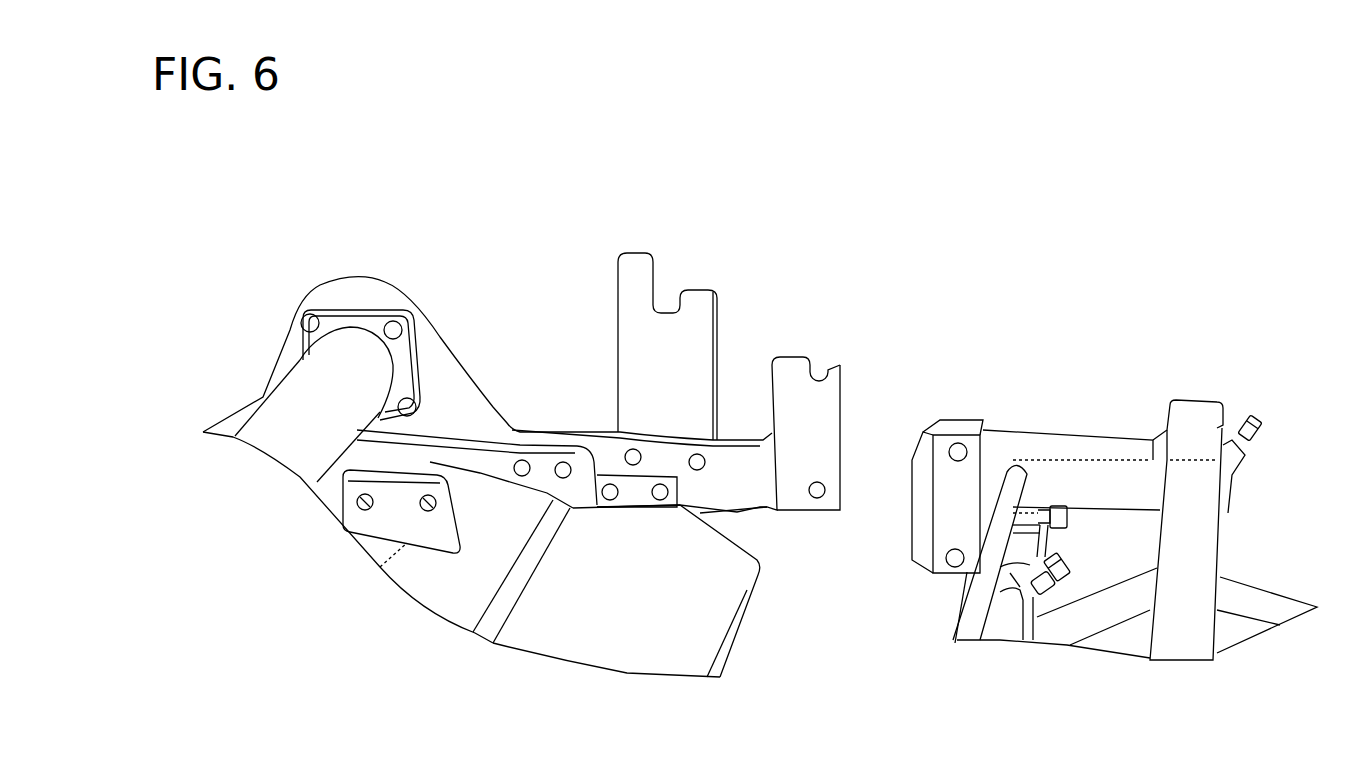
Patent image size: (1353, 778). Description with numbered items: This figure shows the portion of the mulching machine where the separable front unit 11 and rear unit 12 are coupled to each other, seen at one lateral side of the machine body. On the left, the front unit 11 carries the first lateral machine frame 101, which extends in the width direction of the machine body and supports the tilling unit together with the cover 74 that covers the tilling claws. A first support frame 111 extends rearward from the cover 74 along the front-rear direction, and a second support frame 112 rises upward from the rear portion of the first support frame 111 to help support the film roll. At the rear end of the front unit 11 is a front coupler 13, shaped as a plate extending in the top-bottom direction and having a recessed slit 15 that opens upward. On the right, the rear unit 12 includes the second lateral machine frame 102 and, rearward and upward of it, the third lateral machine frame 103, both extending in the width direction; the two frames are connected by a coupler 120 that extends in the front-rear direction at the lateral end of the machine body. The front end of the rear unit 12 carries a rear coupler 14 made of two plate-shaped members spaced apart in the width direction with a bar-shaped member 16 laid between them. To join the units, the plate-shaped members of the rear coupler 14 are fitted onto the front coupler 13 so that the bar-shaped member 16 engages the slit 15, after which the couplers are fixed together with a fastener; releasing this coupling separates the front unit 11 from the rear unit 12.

The front unit 11 is at (470, 228).
The rear unit 12 is at (1117, 317).
The front coupler 13 is at (796, 380).
The rear coupler 14 is at (968, 455).
The slit 15 is at (818, 380).
The bar-shaped member 16 is at (965, 415).
The cover 74 is at (447, 590).
The first lateral machine frame 101 is at (277, 417).
The second lateral machine frame 102 is at (1000, 620).
The third lateral machine frame 103 is at (1207, 540).
The first support frame 111 is at (550, 423).
The second support frame 112 is at (700, 310).
The coupler 120 is at (1073, 443).